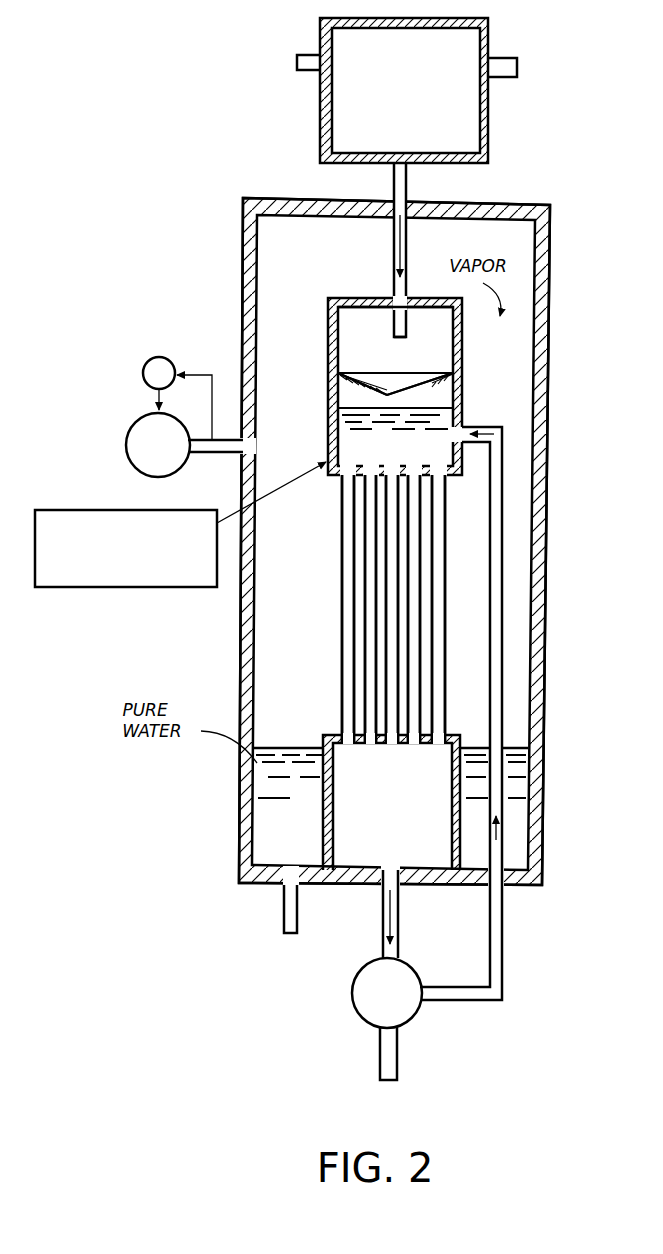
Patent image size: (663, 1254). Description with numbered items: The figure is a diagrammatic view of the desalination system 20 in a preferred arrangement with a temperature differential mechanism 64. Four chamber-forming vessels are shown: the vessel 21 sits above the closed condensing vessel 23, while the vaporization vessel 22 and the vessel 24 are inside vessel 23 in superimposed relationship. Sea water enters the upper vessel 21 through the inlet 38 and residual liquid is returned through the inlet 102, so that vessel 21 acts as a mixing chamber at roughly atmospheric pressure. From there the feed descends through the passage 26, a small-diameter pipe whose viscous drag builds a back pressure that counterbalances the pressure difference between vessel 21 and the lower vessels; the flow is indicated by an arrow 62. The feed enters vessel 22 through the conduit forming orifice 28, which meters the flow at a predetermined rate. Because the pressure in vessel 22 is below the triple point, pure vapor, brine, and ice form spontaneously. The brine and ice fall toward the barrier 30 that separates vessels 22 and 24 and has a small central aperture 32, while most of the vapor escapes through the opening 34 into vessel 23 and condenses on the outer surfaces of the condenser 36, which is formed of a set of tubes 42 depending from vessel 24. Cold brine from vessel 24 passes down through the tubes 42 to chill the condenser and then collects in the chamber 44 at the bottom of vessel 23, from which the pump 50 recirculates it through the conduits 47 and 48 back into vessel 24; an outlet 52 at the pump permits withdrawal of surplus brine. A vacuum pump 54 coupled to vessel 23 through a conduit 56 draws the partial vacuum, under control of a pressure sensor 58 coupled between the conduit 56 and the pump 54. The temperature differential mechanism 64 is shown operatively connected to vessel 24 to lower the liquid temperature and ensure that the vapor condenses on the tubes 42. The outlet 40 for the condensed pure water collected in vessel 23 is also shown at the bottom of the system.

The system 20 is at (230, 170).
The vessel 21 is at (411, 28).
The vaporization vessel 22 is at (455, 328).
The condensing vessel 23 is at (250, 257).
The vessel 24 is at (462, 395).
The passage 26 is at (406, 180).
The conduit forming orifice 28 is at (398, 338).
The barrier 30 is at (357, 383).
The aperture 32 is at (385, 392).
The opening 34 is at (345, 304).
The condenser 36 is at (341, 533).
The inlet 38 is at (313, 56).
The outlet pipe 40 is at (284, 903).
The tubes 42 is at (345, 632).
The chamber 44 is at (323, 812).
The conduit 47 is at (398, 913).
The conduit 48 is at (502, 914).
The pump 50 is at (412, 1012).
The outlet 52 is at (398, 1065).
The vacuum pump 54 is at (134, 440).
The conduit 56 is at (213, 452).
The pressure sensor 58 is at (156, 360).
The arrow 62 is at (406, 238).
The temperature differential mechanism 64 is at (148, 587).
The inlet 102 is at (506, 61).